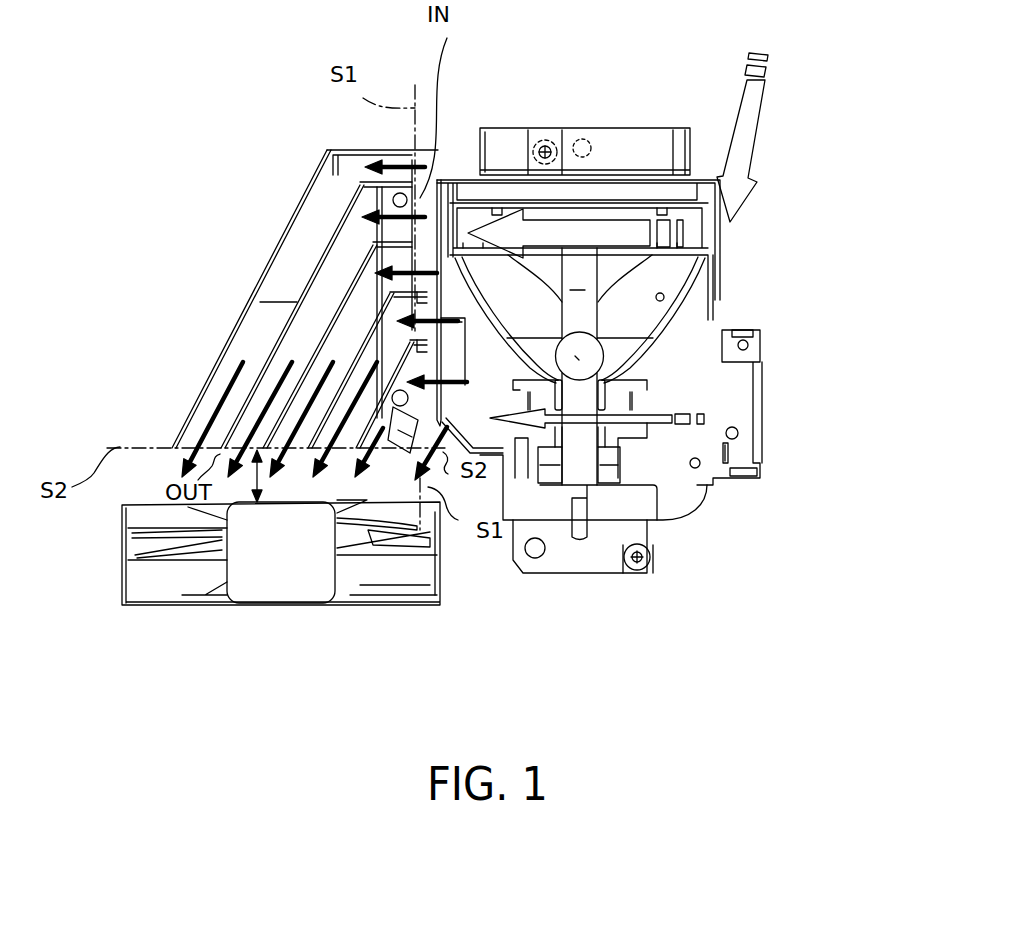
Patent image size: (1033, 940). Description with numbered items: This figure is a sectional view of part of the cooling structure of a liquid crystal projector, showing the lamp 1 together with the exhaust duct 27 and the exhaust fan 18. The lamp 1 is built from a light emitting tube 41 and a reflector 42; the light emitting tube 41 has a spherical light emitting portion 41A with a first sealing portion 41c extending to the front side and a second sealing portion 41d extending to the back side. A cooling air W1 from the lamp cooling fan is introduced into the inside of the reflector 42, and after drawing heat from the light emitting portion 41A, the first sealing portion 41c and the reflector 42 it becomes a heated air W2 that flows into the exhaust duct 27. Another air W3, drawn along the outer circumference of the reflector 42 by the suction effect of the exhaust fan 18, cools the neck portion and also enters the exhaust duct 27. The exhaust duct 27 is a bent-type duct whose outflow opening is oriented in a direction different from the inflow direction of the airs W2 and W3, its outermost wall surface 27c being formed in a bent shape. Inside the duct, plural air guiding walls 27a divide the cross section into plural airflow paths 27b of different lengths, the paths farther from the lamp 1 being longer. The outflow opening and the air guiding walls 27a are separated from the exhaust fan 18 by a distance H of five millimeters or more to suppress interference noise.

The lamp 1 is at (685, 391).
The exhaust fan 18 is at (300, 560).
The exhaust duct 27 is at (257, 293).
The air guiding walls 27a is at (338, 380).
The airflow paths 27b is at (300, 343).
The outermost wall surface 27c is at (272, 263).
The light emitting tube 41 is at (640, 315).
The light emitting portion 41A is at (577, 358).
The first sealing portion 41c is at (588, 287).
The second sealing portion 41d is at (573, 475).
The reflector 42 is at (663, 343).
The cooling air W1 is at (771, 132).
The air W2 is at (598, 243).
The air W3 is at (617, 426).
The separation distance H is at (258, 480).